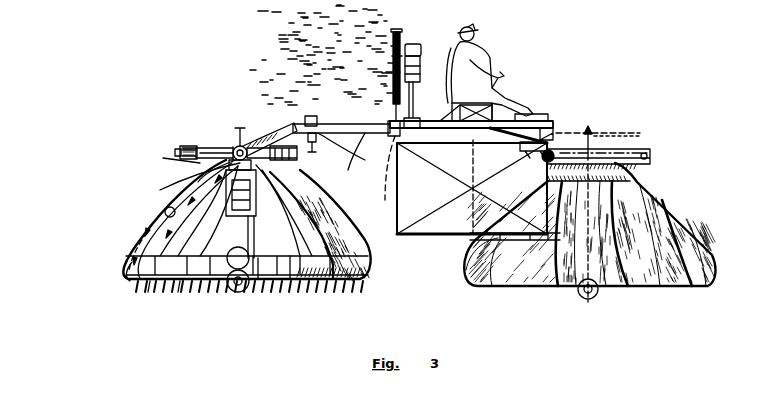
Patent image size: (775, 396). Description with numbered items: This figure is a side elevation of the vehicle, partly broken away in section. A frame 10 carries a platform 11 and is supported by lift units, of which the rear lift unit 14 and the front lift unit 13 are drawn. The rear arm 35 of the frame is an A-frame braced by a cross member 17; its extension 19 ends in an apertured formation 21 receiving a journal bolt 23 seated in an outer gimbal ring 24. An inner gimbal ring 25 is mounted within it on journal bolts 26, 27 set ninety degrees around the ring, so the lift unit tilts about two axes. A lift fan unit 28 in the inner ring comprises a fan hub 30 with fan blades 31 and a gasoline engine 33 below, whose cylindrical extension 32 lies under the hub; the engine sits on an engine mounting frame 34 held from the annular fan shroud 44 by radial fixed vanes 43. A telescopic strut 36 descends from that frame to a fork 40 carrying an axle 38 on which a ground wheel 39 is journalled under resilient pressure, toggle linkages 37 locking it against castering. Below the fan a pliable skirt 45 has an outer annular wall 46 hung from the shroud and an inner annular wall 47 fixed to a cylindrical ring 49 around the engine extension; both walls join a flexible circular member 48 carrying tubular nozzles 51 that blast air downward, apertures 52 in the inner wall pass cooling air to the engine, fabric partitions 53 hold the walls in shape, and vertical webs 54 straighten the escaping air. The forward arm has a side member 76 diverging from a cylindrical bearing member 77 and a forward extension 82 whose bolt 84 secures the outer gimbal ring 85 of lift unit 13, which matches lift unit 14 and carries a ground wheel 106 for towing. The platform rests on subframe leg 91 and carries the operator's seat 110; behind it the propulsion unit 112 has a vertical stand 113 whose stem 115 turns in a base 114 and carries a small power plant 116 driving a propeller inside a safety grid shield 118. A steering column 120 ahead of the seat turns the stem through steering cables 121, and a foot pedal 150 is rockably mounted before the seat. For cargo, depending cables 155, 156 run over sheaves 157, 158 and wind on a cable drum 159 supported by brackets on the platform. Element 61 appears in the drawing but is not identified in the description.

The frame 10 is at (440, 150).
The platform 11 is at (532, 124).
The lift unit 13 is at (715, 262).
The lift unit 14 is at (128, 272).
The cross member 17 is at (312, 123).
The extension 19 is at (241, 145).
The apertured formation 21 is at (233, 150).
The journal bolt 23 is at (236, 150).
The outer gimbal ring 24 is at (182, 146).
The inner gimbal ring 25 is at (210, 148).
The journal bolt 26 is at (180, 160).
The journal bolt 27 is at (296, 159).
The lift fan unit 28 is at (240, 140).
The fan hub 30 is at (238, 146).
The fan blades 31 is at (232, 148).
The cylindrical extension 32 is at (180, 176).
The gasoline engine 33 is at (244, 216).
The engine mounting frame 34 is at (222, 205).
The rear arm 35 is at (345, 140).
The telescopic strut 36 is at (262, 222).
The toggle linkages 37 is at (292, 289).
The axle 38 is at (230, 289).
The ground wheel 39 is at (248, 291).
The fork 40 is at (260, 287).
The fixed vanes 43 is at (175, 152).
The fan shroud 44 is at (272, 128).
The skirt 45 is at (150, 224).
The outer annular wall 46 is at (165, 203).
The inner annular wall 47 is at (166, 210).
The circular member 48 is at (148, 293).
The fixed cylindrical ring 49 is at (212, 168).
The tubular grommets 51 is at (178, 293).
The apertures 52 is at (182, 190).
The fabric partitions 53 is at (126, 262).
The vertical webs 54 is at (188, 264).
The fitting 61 is at (314, 116).
The side member 76 is at (362, 140).
The cylindrical bearing member 77 is at (316, 146).
The forward extension 82 is at (522, 151).
The bolt 84 is at (542, 160).
The outer gimbal ring 85 is at (644, 152).
The leg 91 is at (470, 147).
The ground wheel 106 is at (598, 297).
The operator's seat 110 is at (450, 100).
The vehicle propulsion unit 112 is at (413, 44).
The vertical stand 113 is at (386, 72).
The base 114 is at (390, 122).
The stem 115 is at (392, 97).
The power plant 116 is at (420, 69).
The safety grid shield 118 is at (394, 32).
The steering column 120 is at (492, 80).
The steering cables 121 is at (448, 112).
The foot pedal 150 is at (549, 128).
The cable 155 is at (397, 206).
The cable 156 is at (568, 234).
The sheave 157 is at (384, 150).
The sheave 158 is at (592, 125).
The cable drum 159 is at (514, 116).